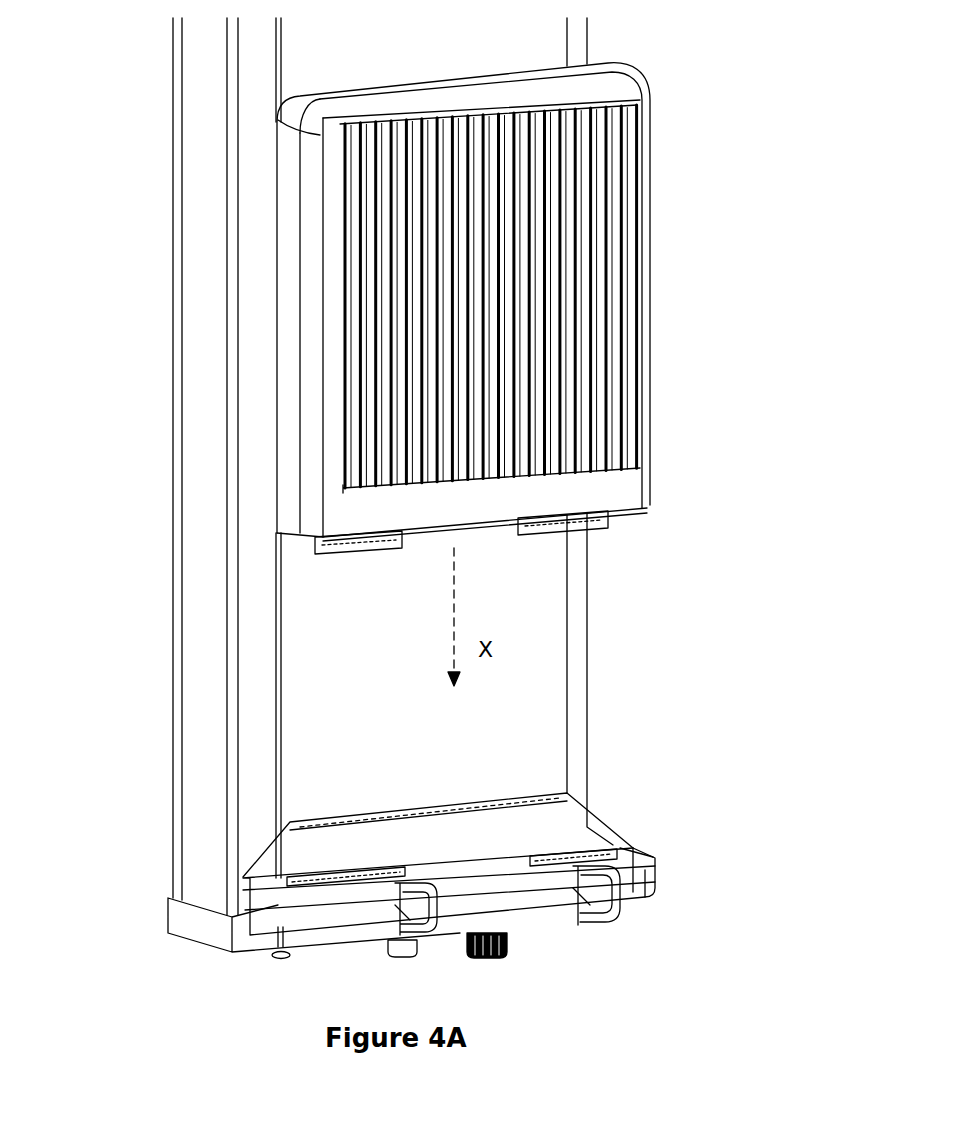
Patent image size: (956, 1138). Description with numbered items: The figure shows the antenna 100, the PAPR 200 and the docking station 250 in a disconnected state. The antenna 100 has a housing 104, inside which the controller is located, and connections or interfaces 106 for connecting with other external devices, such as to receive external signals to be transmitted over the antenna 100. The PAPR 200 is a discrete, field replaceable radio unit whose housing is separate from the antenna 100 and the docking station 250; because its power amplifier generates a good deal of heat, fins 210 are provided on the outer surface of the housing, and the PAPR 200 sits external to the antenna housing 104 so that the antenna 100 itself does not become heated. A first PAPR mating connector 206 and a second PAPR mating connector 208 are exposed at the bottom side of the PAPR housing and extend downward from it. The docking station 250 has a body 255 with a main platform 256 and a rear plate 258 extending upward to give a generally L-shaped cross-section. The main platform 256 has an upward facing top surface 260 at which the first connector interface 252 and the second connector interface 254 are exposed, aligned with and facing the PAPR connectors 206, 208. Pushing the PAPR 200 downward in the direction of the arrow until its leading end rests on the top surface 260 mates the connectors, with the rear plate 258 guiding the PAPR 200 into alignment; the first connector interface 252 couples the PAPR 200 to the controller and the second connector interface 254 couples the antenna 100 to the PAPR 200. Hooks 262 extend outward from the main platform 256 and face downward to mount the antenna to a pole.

The antenna 100 is at (329, 517).
The antenna housing 104 is at (173, 567).
The connections or interfaces 106 is at (280, 958).
The PAPR 200 is at (526, 342).
The first PAPR mating connector 206 is at (372, 552).
The second PAPR mating connector 208 is at (610, 530).
The fins 210 is at (633, 273).
The docking station 250 is at (528, 869).
The first connector interface 252 is at (367, 867).
The second connector interface 254 is at (603, 838).
The body 255 is at (638, 842).
The main platform 256 is at (652, 892).
The rear plate 258 is at (467, 828).
The top surface 260 is at (442, 870).
The hooks 262 is at (617, 928).